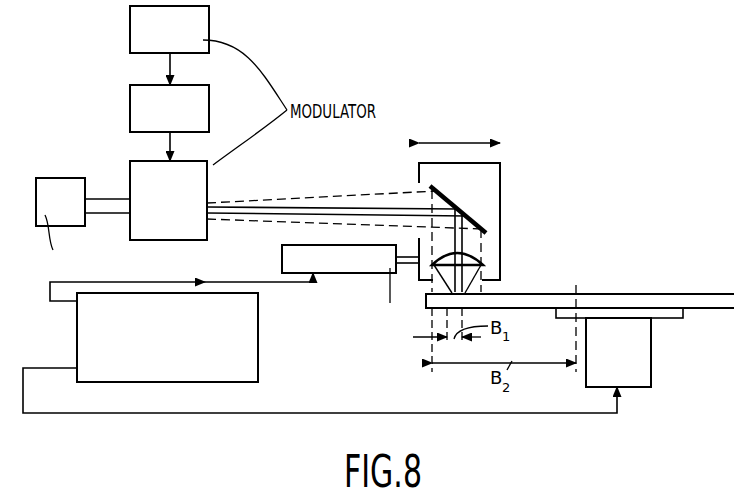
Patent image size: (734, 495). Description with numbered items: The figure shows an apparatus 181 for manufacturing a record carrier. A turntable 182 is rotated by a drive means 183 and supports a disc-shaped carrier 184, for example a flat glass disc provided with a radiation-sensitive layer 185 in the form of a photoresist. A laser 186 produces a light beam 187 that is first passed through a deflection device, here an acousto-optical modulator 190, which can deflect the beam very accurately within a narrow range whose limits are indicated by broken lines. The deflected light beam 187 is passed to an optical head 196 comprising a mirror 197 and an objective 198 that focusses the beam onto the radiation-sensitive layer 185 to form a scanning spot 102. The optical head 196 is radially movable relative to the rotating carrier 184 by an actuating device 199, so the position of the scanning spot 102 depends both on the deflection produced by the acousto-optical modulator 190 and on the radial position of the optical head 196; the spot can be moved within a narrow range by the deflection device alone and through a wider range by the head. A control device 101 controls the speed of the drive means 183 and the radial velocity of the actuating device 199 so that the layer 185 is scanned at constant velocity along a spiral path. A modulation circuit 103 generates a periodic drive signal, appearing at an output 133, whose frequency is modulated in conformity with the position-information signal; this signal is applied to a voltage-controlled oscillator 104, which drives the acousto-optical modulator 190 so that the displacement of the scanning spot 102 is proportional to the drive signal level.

The control device 101 is at (258, 350).
The scanning spot 102 is at (470, 283).
The modulation circuit 103 is at (209, 30).
The voltage-controlled oscillator 104 is at (209, 104).
The output of the FM modulator 133 is at (173, 65).
The apparatus 181 is at (621, 187).
The turntable 182 is at (670, 322).
The drive means 183 is at (640, 377).
The disc-shaped carrier 184 is at (708, 306).
The radiation-sensitive layer 185 is at (701, 294).
The laser 186 is at (60, 178).
The light beam 187 is at (102, 199).
The acousto-optical modulator 190 is at (185, 243).
The optical head 196 is at (488, 178).
The mirror 197 is at (487, 222).
The objective 198 is at (466, 255).
The actuating device 199 is at (350, 274).